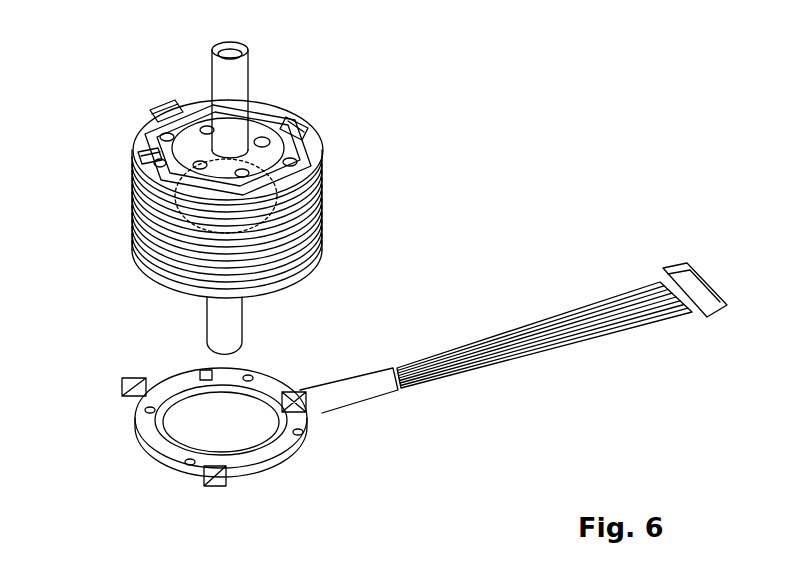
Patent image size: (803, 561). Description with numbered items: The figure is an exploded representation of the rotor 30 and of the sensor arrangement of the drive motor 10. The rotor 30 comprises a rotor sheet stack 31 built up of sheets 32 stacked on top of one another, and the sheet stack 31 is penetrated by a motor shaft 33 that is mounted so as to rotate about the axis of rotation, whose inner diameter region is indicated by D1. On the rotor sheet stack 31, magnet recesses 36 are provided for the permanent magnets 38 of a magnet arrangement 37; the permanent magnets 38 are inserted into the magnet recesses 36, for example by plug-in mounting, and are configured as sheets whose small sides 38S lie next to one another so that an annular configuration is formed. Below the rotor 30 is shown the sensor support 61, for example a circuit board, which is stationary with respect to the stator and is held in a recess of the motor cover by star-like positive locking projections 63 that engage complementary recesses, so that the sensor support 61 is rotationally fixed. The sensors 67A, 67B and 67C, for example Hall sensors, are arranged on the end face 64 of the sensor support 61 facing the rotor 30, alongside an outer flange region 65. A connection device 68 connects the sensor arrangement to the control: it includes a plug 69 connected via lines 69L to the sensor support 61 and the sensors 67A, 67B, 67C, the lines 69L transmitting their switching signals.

The motor assembly 10 is at (640, 147).
The rotor 30 is at (320, 230).
The rotor sheet stack 31 is at (128, 197).
The sheets 32 is at (133, 230).
The motor shaft 33 is at (232, 335).
The magnet recesses 36 is at (180, 108).
The magnet arrangement 37 is at (273, 123).
The permanent magnets 38 is at (155, 127).
The small sides 38S is at (155, 125).
The inner diameter D1 is at (177, 220).
The sensor support 61 is at (188, 380).
The positive locking projections 63 is at (192, 415).
The end face 64 is at (265, 457).
The bracket flange 65 is at (287, 463).
The sensor 67A is at (303, 393).
The sensor 67B is at (217, 480).
The sensor 67C is at (138, 380).
The connection device 68 is at (532, 315).
The plug 69 is at (707, 310).
The lines 69L is at (583, 335).